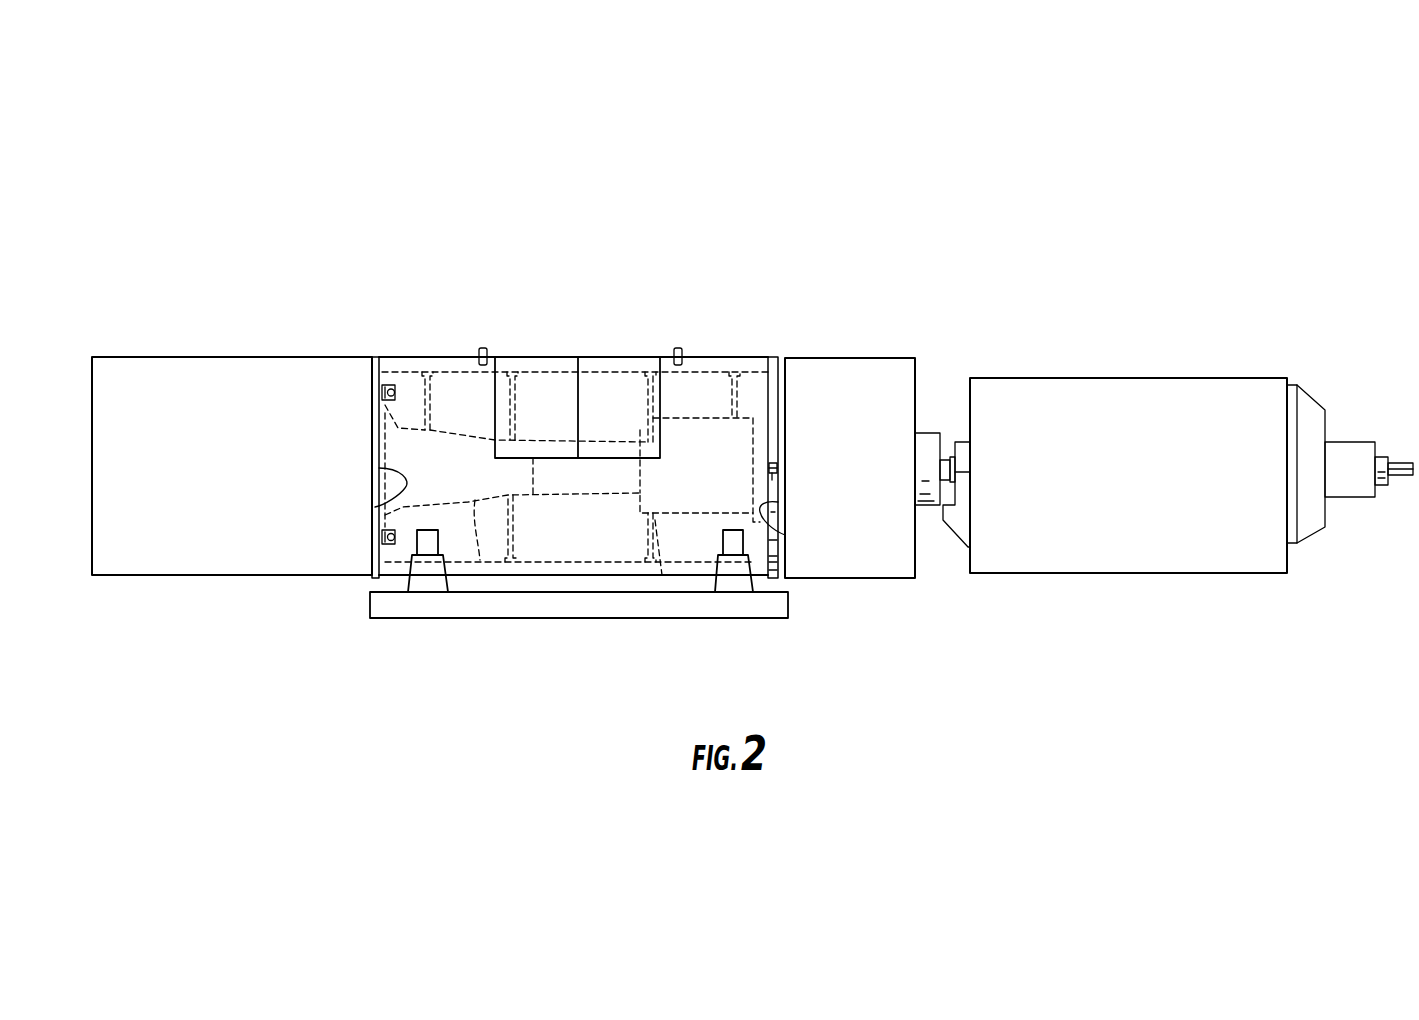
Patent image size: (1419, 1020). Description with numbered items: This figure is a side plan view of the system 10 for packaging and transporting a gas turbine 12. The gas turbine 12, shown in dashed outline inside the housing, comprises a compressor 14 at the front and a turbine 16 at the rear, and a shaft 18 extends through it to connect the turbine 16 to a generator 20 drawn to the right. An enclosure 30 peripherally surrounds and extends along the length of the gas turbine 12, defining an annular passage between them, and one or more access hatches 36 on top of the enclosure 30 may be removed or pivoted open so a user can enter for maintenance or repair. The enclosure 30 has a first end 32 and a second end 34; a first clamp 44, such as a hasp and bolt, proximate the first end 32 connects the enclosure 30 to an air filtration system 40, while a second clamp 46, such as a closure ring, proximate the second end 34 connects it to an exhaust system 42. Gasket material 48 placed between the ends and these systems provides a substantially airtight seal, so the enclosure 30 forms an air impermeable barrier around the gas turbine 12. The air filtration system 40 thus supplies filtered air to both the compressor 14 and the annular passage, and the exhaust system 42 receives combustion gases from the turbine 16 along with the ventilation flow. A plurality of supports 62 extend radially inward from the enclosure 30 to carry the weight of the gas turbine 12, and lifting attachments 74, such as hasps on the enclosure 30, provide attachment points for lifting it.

The system 10 is at (370, 178).
The gas turbine 12 is at (556, 520).
The compressor 14 is at (480, 560).
The turbine 16 is at (662, 575).
The shaft 18 is at (920, 432).
The generator 20 is at (1127, 478).
The enclosure 30 is at (505, 575).
The first end 32 is at (375, 507).
The second end 34 is at (778, 502).
The access hatch 36 is at (620, 357).
The air filtration system 40 is at (224, 478).
The exhaust system 42 is at (874, 463).
The first clamp 44 is at (391, 385).
The second clamp 46 is at (776, 455).
The gasket material 48 is at (370, 447).
The support 62 is at (430, 393).
The lifting attachment 74 is at (483, 348).